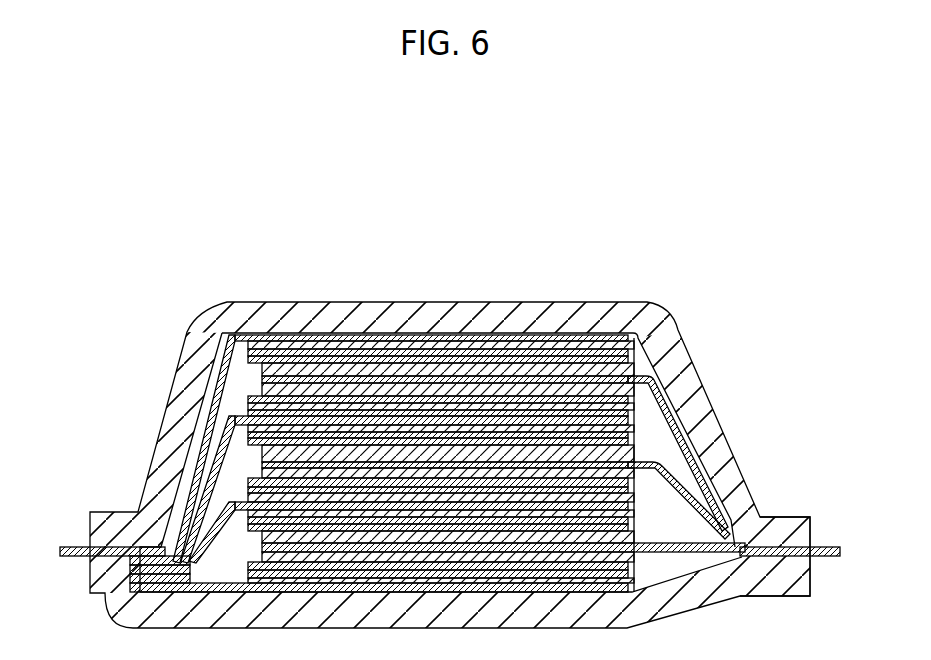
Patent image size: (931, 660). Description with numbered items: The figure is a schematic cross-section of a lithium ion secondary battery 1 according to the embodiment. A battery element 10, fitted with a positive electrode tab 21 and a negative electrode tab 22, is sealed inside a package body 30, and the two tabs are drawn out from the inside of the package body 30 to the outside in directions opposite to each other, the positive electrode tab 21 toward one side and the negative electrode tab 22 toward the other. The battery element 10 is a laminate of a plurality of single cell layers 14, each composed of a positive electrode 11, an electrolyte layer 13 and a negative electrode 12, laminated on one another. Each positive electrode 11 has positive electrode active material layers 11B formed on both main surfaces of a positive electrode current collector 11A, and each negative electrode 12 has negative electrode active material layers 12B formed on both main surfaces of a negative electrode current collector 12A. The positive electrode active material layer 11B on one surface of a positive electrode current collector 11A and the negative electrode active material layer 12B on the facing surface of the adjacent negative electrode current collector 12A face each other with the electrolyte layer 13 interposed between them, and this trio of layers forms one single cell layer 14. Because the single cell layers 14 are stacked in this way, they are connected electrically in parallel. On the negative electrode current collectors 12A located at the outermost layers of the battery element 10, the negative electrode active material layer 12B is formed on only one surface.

The lithium ion secondary battery 1 is at (175, 253).
The battery element 10 is at (636, 500).
The positive electrode 11 is at (522, 240).
The positive electrode current collector 11A is at (434, 378).
The positive electrode active material layer 11B is at (350, 370).
The negative electrode 12 is at (668, 240).
The negative electrode current collector 12A is at (576, 352).
The negative electrode active material layer 12B is at (262, 345).
The electrolyte layer 13 is at (315, 349).
The single cell layer 14 is at (378, 240).
The positive electrode tab 21 is at (823, 548).
The negative electrode tab 22 is at (68, 545).
The package body 30 is at (793, 518).